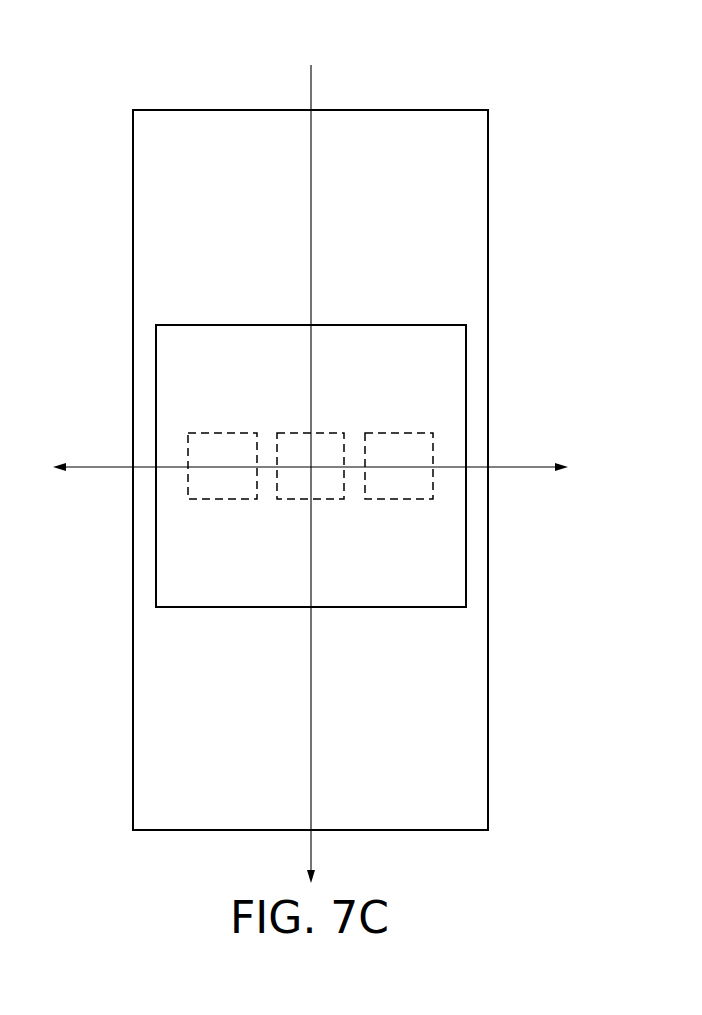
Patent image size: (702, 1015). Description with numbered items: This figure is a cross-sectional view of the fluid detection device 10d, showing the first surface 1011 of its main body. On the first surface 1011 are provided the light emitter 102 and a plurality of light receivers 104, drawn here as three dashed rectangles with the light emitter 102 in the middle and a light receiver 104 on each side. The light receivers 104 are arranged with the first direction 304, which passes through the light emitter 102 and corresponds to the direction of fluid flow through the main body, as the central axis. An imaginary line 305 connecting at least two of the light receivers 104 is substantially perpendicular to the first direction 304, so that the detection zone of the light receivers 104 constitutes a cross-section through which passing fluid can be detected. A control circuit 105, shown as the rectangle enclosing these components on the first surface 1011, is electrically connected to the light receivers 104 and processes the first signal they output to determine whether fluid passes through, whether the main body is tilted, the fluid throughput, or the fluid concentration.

The fluid detection device 10d is at (104, 95).
The first surface 1011 is at (449, 274).
The control circuit 105 is at (466, 362).
The first direction 304 is at (313, 73).
The imaginary line 305 is at (97, 466).
The light receiver 104 is at (209, 499).
The light emitter 102 is at (334, 499).